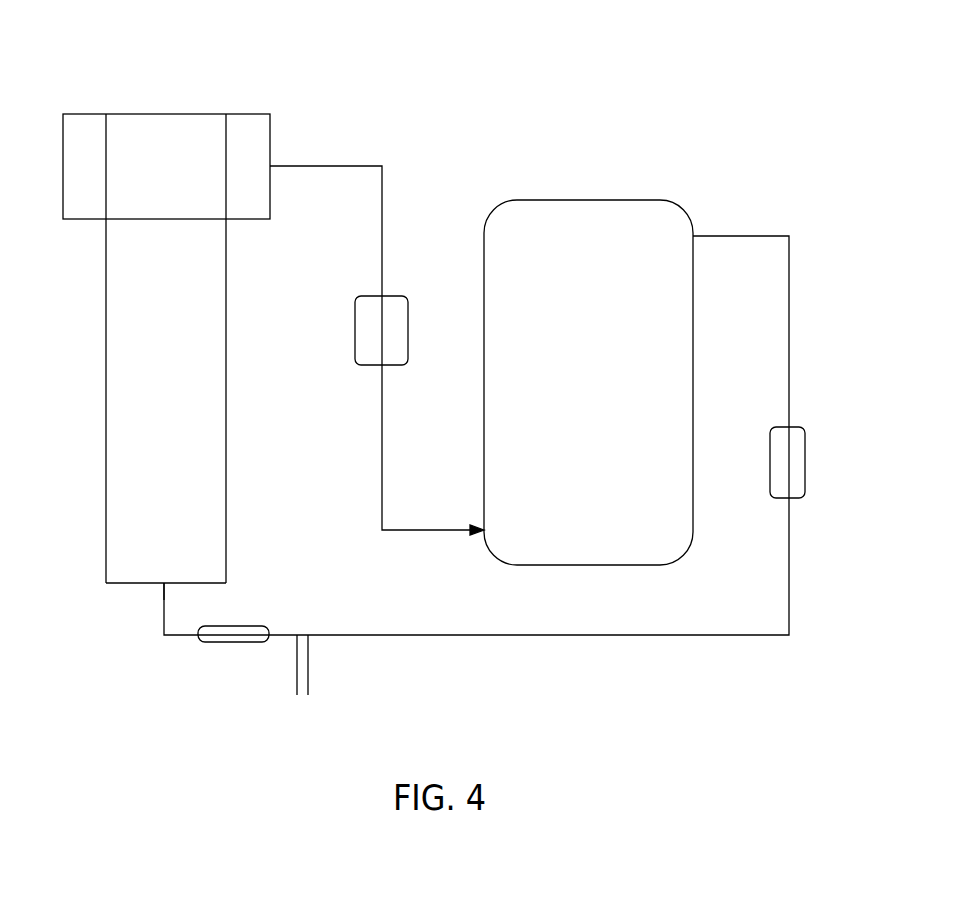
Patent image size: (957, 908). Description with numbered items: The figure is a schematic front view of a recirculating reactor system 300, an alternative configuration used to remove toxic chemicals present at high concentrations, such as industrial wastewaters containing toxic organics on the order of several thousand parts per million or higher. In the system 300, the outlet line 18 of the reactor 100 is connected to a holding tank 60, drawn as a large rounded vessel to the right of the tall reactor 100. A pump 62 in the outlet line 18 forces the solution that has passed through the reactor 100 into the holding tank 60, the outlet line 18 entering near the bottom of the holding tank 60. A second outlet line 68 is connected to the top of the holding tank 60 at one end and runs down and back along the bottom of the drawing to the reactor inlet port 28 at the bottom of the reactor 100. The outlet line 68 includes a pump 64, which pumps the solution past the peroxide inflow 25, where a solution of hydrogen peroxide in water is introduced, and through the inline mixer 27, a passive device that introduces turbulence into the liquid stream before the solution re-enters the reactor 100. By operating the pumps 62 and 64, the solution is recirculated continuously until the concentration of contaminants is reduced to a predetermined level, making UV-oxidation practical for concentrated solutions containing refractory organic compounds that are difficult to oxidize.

The recirculating reactor system 300 is at (505, 102).
The reactor 100 is at (176, 113).
The outlet line 18 is at (339, 166).
The pump 62 is at (408, 312).
The holding tank 60 is at (624, 200).
The outlet line 68 is at (739, 236).
The pump 64 is at (805, 443).
The reactor inlet port 28 is at (163, 585).
The inline mixer 27 is at (212, 644).
The peroxide inflow 25 is at (297, 676).